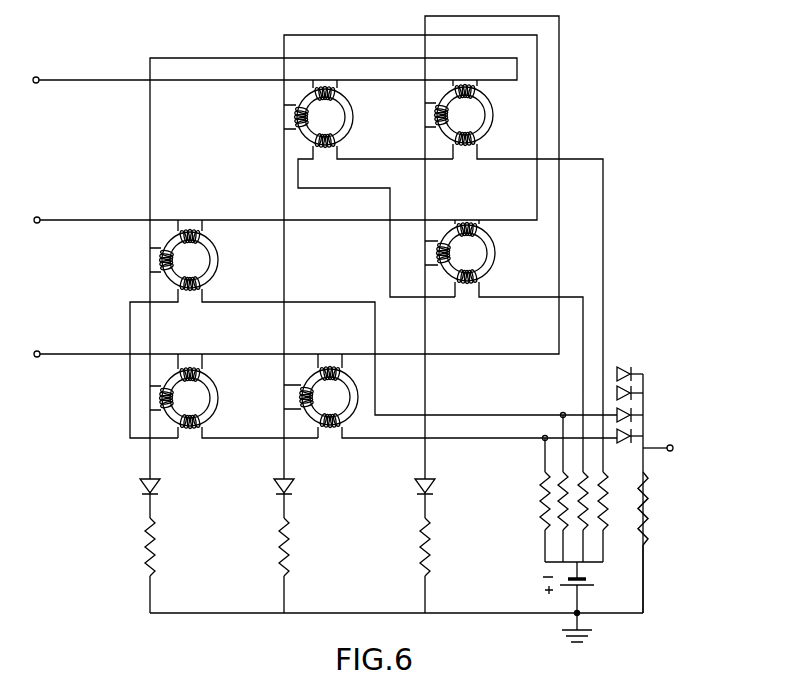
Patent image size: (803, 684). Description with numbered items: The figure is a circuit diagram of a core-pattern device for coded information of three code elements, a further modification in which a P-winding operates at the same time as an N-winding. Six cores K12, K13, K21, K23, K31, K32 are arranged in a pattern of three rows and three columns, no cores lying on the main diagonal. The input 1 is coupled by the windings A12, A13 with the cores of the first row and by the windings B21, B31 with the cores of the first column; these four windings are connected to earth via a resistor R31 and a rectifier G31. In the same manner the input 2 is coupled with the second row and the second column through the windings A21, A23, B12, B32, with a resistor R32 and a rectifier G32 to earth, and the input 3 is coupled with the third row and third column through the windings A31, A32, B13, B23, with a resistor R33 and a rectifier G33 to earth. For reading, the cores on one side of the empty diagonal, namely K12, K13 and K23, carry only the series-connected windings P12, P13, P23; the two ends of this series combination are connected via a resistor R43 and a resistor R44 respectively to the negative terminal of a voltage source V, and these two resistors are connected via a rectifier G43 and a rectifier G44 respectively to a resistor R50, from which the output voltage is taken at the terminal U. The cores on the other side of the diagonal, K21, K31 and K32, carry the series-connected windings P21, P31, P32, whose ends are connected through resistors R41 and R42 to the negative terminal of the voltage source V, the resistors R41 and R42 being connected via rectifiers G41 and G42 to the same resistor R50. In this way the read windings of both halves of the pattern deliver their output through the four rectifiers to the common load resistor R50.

The input 1 is at (274, 268).
The input 2 is at (284, 257).
The input 3 is at (295, 247).
The core K12 is at (325, 117).
The core K13 is at (465, 115).
The core K21 is at (190, 260).
The core K23 is at (467, 253).
The core K31 is at (190, 398).
The core K32 is at (330, 397).
The winding A12 is at (325, 83).
The winding A13 is at (465, 81).
The winding A21 is at (190, 224).
The winding A23 is at (466, 220).
The winding A31 is at (190, 361).
The winding A32 is at (330, 360).
The winding B12 is at (297, 132).
The winding B13 is at (437, 130).
The winding B21 is at (163, 270).
The winding B23 is at (440, 267).
The winding B31 is at (163, 410).
The winding B32 is at (303, 410).
The reading winding P12 is at (376, 215).
The reading winding P13 is at (528, 252).
The reading winding P21 is at (373, 357).
The reading winding P23 is at (519, 331).
The reading winding P31 is at (248, 437).
The reading winding P32 is at (467, 437).
The rectifier G31 is at (158, 490).
The rectifier G32 is at (292, 490).
The rectifier G33 is at (433, 490).
The rectifier G41 is at (617, 443).
The rectifier G42 is at (632, 412).
The rectifier G43 is at (632, 390).
The rectifier G44 is at (619, 370).
The resistor R31 is at (156, 565).
The resistor R32 is at (290, 565).
The resistor R33 is at (430, 565).
The resistor R41 is at (545, 490).
The resistor R42 is at (563, 475).
The resistor R43 is at (583, 490).
The resistor R44 is at (603, 515).
The resistor R50 is at (643, 528).
The output terminal U is at (658, 459).
The voltage source V is at (570, 587).